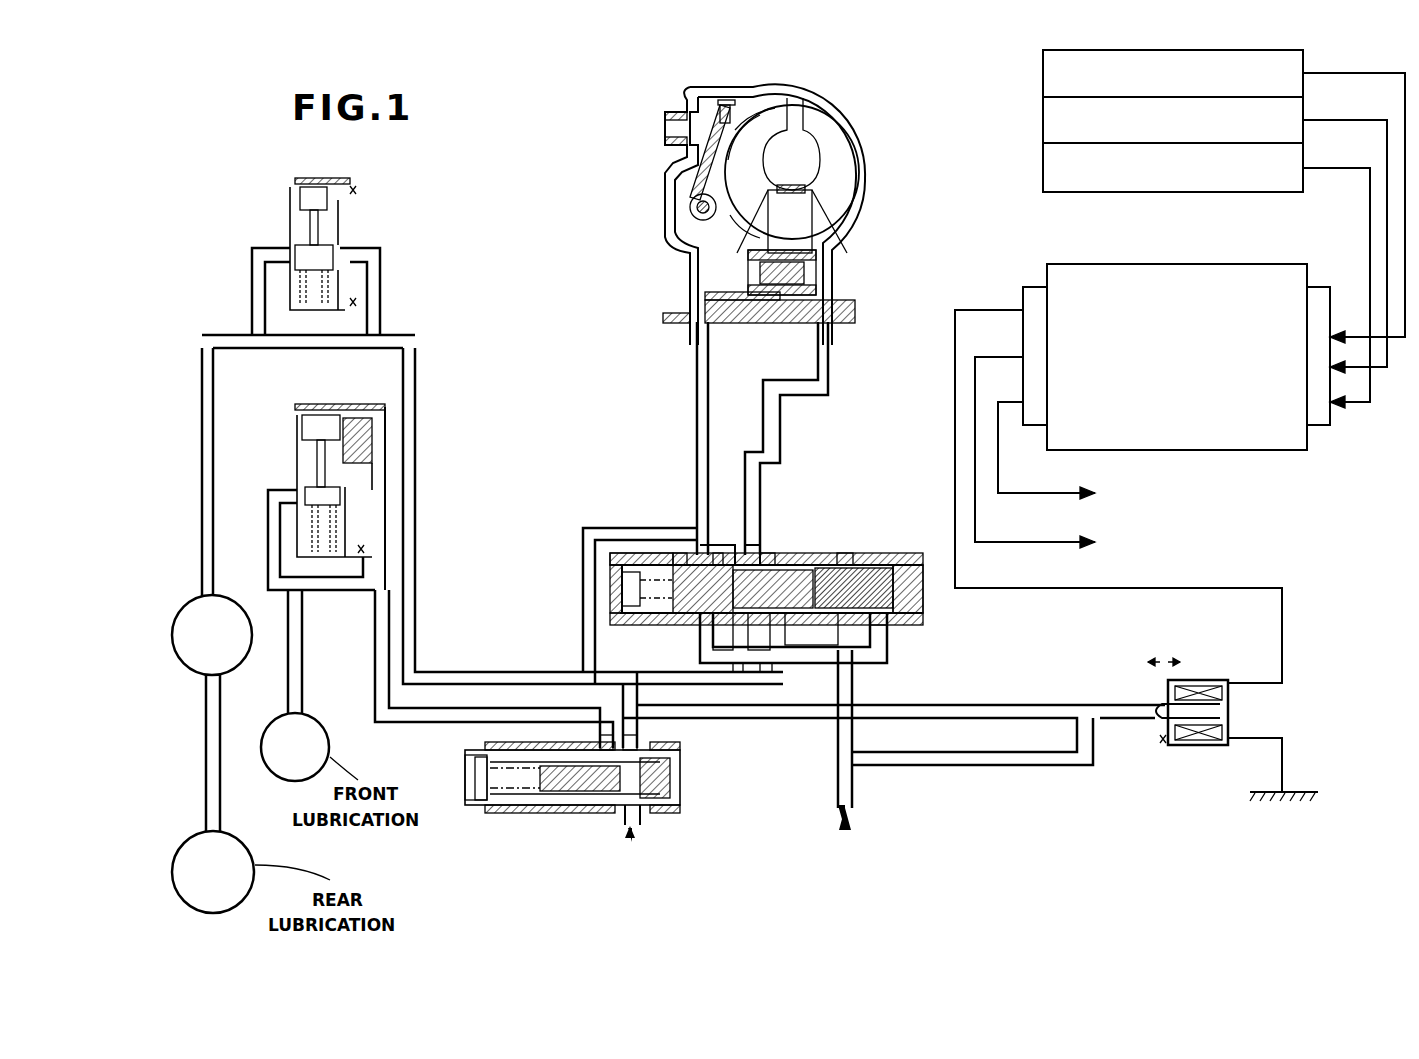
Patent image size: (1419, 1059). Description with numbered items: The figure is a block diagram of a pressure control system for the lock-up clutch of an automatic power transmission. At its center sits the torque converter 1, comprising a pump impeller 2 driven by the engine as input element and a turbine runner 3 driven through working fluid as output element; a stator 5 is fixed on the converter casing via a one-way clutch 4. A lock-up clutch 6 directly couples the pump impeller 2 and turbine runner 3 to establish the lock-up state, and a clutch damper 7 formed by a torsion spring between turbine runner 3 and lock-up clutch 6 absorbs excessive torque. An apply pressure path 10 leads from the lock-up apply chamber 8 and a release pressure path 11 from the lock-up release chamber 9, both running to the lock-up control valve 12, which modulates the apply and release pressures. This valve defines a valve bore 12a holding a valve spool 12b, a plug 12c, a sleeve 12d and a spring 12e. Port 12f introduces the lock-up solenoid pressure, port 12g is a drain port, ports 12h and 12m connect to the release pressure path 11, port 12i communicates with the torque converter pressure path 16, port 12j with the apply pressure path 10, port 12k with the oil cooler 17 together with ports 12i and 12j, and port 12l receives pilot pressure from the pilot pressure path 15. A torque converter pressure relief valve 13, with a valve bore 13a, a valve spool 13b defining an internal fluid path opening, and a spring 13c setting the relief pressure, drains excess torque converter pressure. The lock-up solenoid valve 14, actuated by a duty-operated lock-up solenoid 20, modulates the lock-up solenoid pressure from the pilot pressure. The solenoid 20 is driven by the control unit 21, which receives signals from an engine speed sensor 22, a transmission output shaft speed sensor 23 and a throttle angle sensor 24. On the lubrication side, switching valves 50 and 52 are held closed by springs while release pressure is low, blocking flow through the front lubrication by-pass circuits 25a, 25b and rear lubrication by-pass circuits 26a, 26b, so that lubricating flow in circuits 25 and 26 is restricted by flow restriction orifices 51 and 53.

The torque converter 1 is at (848, 108).
The pump impeller 2 is at (843, 137).
The turbine runner 3 is at (760, 125).
The one-way clutch 4 is at (815, 270).
The stator 5 is at (805, 218).
The lock-up clutch 6 is at (693, 182).
The clutch damper 7 is at (690, 207).
The lock-up apply chamber 8 is at (805, 140).
The lock-up release chamber 9 is at (690, 275).
The apply pressure path 10 is at (828, 340).
The release pressure path 11 is at (697, 370).
The lock-up control valve 12 is at (852, 553).
The valve bore 12a is at (800, 562).
The valve spool 12b is at (770, 556).
The plug 12c is at (870, 555).
The sleeve 12d is at (918, 592).
The spring 12e is at (622, 582).
The port 12f is at (625, 553).
The drain port 12g is at (678, 553).
The port 12h is at (712, 545).
The port 12i is at (745, 540).
The port 12j is at (770, 622).
The port 12k is at (765, 553).
The port 12l is at (860, 650).
The port 12m is at (887, 625).
The torque converter pressure relief valve 13 is at (560, 805).
The valve bore 13a is at (528, 762).
The valve spool 13b is at (630, 752).
The spring 13c is at (487, 805).
The lock-up solenoid valve 14 is at (1158, 732).
The pilot pressure path 15 is at (838, 740).
The torque converter pressure path 16 is at (583, 630).
The oil cooler 17 is at (172, 638).
The lock-up solenoid 20 is at (1228, 685).
The control unit 21 is at (1148, 264).
The engine speed sensor 22 is at (1043, 75).
The transmission output shaft speed sensor 23 is at (1043, 125).
The throttle angle sensor 24 is at (1043, 172).
The torque converter pressure line 25 is at (412, 722).
The front lubrication by-pass circuit 25a is at (385, 478).
The front lubrication by-pass circuit 25b is at (268, 512).
The lubrication line 26 is at (415, 503).
The rear lubrication by-pass circuit 26a is at (380, 262).
The rear lubrication by-pass circuit 26b is at (252, 300).
The switching valve 50 is at (294, 433).
The flow restriction orifice 51 is at (330, 592).
The switching valve 52 is at (272, 211).
The flow restriction orifice 53 is at (318, 340).